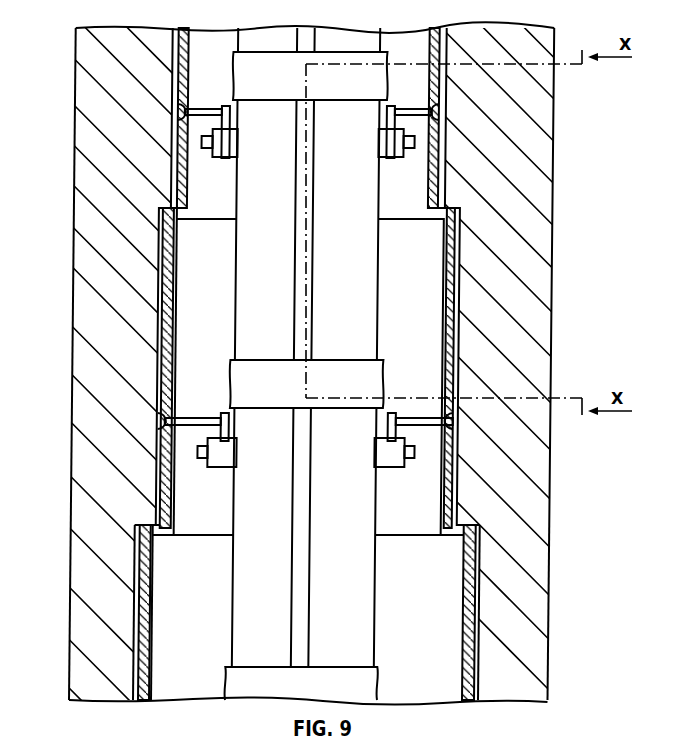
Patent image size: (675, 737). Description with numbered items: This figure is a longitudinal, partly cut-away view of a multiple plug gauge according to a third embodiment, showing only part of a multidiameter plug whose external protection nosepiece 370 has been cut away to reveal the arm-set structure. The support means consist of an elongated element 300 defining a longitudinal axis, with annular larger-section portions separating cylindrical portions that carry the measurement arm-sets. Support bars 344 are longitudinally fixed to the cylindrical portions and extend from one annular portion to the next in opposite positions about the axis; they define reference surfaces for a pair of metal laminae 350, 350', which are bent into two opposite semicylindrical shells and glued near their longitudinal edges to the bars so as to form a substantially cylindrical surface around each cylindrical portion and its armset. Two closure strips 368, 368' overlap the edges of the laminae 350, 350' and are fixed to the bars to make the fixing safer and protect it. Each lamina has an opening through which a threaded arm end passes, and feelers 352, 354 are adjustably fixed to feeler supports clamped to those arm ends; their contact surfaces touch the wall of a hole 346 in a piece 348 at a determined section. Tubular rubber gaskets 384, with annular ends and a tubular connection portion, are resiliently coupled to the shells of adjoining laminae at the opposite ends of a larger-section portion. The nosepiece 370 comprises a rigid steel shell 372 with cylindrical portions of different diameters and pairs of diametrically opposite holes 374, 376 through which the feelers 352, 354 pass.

The elongated element 300 is at (220, 498).
The support bar 344 is at (159, 631).
The hole 346 is at (475, 638).
The piece 348 is at (520, 547).
The metal lamina 350 is at (210, 347).
The metal lamina 350' is at (413, 364).
The feeler 352 is at (442, 105).
The feeler 354 is at (78, 31).
The closure strip 368 is at (293, 379).
The closure strip 368' is at (446, 347).
The external protection nosepiece 370 is at (153, 330).
The rigid shell 372 is at (167, 382).
The hole 374 is at (460, 208).
The hole 376 is at (176, 110).
The tubular rubber gasket 384 is at (373, 75).